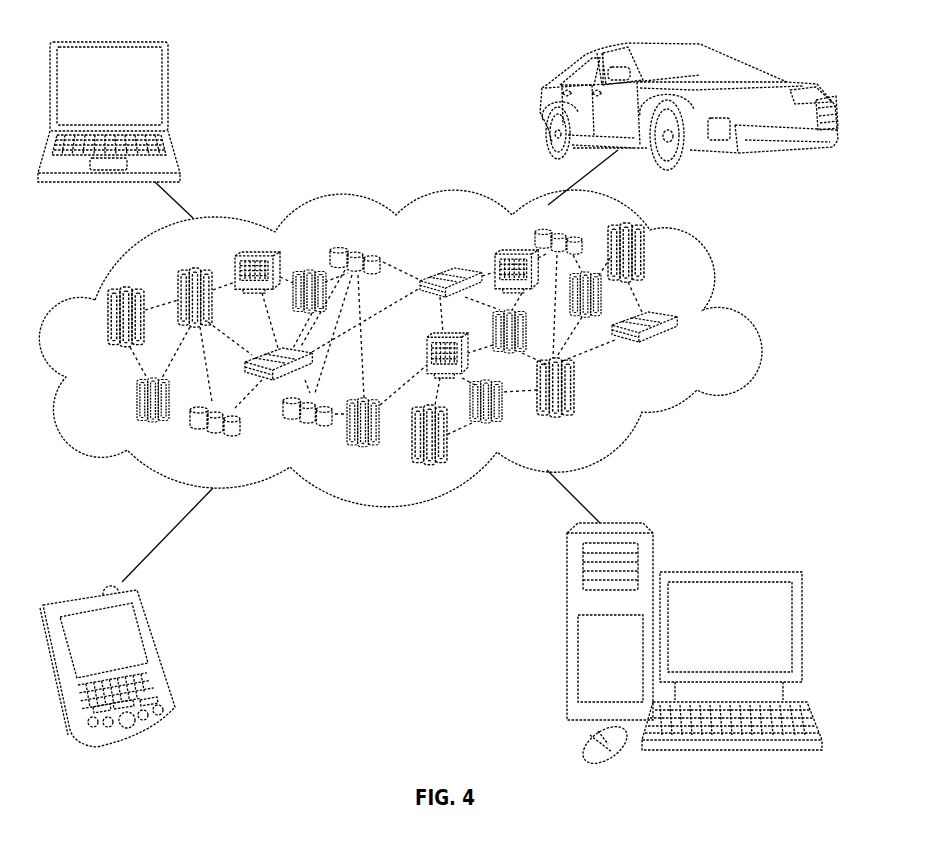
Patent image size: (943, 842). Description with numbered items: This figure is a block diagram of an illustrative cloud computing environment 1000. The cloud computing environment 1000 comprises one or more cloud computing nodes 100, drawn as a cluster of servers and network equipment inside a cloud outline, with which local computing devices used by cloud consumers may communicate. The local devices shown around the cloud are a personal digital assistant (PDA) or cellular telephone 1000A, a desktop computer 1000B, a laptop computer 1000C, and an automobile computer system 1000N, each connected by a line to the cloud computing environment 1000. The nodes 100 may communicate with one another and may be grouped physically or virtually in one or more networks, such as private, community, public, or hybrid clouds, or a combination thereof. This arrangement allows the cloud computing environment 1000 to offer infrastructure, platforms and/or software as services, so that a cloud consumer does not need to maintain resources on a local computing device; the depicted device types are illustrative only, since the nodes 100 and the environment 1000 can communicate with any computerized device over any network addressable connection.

The cloud computing nodes 100 is at (678, 350).
The cloud computing environment 1000 is at (726, 325).
The personal digital assistant (PDA) or cellular telephone 1000A is at (158, 653).
The desktop computer 1000B is at (737, 552).
The laptop computer 1000C is at (168, 93).
The automobile computer system 1000N is at (545, 107).